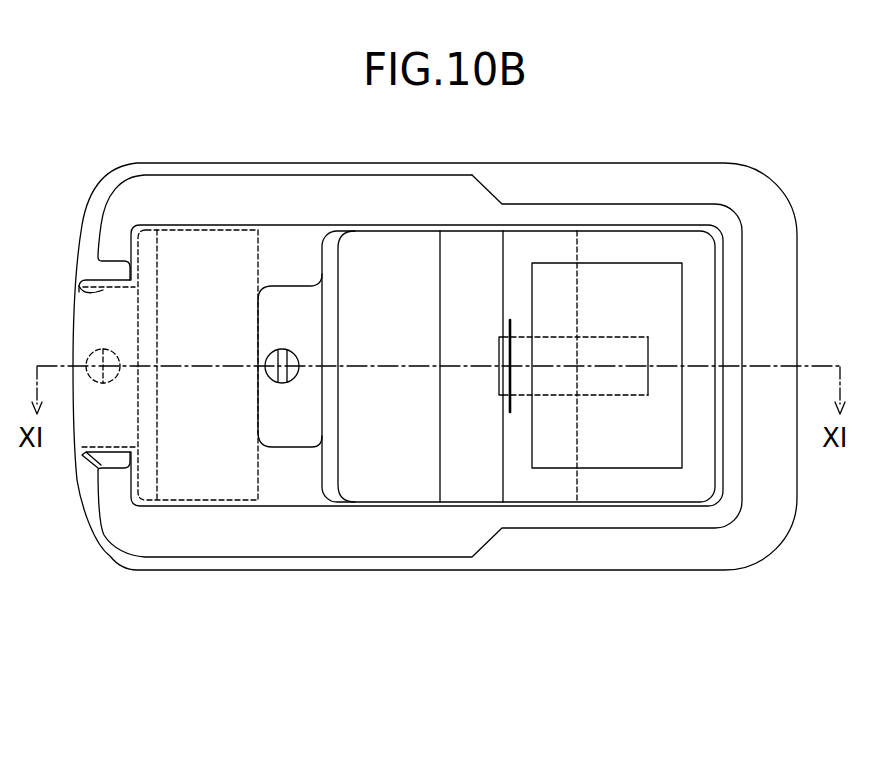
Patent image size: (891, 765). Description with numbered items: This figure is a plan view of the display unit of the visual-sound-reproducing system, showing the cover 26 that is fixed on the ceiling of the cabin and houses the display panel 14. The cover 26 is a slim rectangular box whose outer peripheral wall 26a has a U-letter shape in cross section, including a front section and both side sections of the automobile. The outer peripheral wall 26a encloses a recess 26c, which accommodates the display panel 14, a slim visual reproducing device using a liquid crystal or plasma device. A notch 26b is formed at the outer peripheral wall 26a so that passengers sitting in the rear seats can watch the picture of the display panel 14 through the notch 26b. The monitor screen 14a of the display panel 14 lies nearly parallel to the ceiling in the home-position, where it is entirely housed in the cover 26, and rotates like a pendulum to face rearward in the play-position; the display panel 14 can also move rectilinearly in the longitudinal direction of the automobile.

The cover 26 is at (797, 237).
The outer peripheral wall 26a is at (760, 204).
The notch 26b is at (79, 294).
The recess 26c is at (288, 480).
The display panel 14 is at (643, 488).
The monitor screen 14a is at (650, 440).